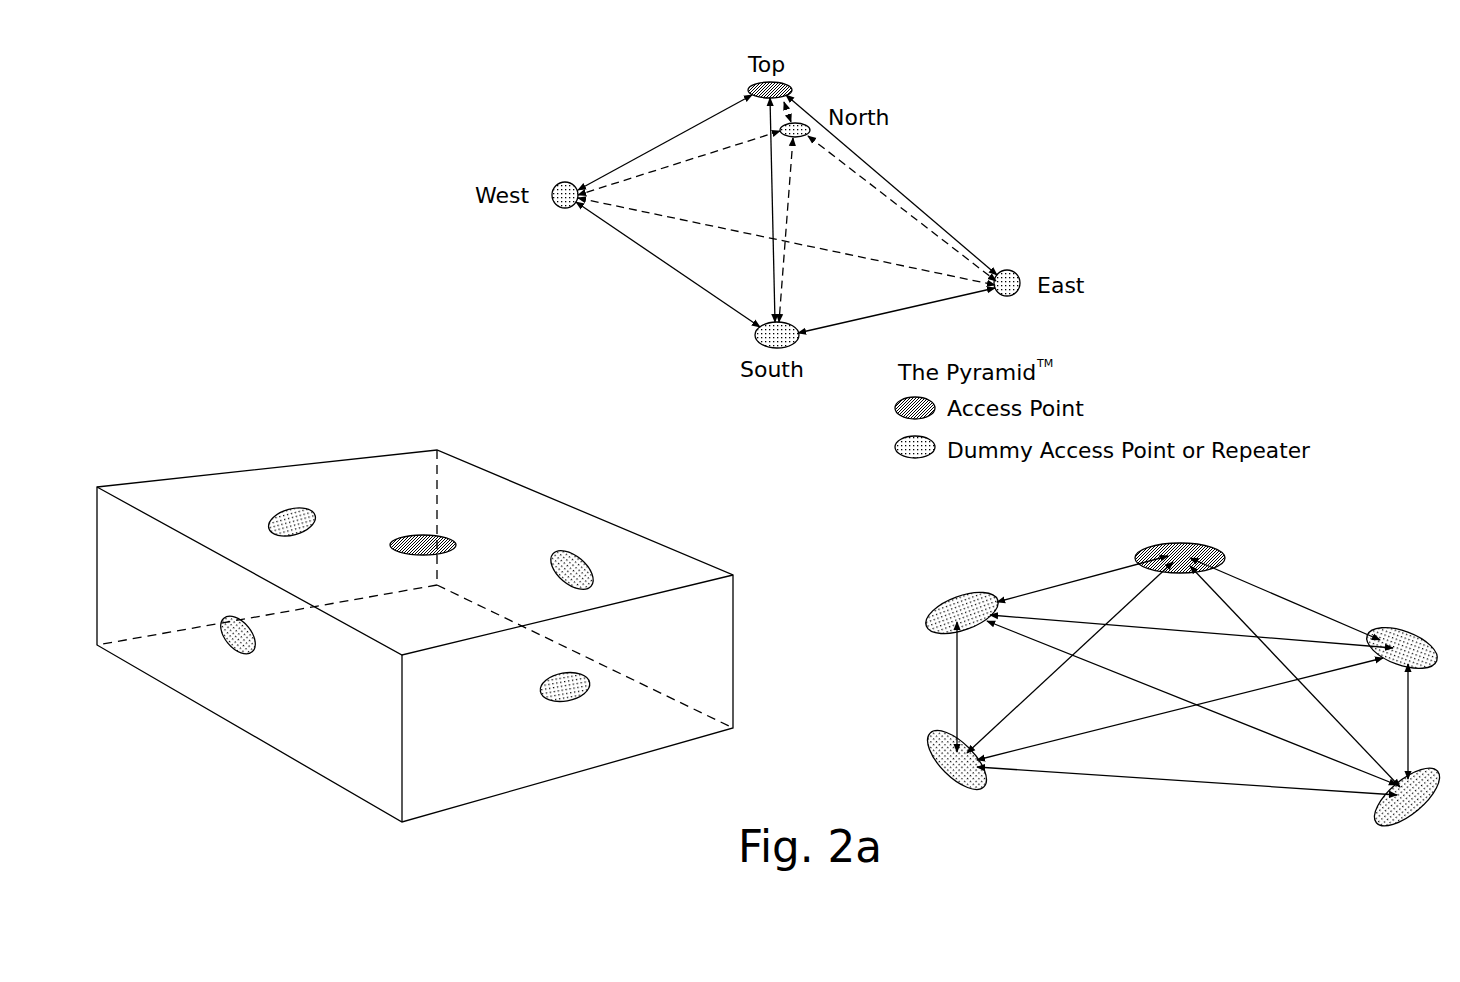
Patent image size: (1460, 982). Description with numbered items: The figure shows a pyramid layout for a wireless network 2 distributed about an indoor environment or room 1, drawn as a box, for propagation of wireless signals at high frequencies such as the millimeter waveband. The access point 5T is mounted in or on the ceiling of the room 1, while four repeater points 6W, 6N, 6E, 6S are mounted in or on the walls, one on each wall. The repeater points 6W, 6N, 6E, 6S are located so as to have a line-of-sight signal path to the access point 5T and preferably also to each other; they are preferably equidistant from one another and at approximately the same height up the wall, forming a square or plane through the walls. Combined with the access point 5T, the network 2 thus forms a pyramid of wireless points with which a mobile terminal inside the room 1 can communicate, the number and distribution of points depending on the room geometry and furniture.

The room 1 is at (503, 475).
The network 2 is at (248, 447).
The access point 5T is at (413, 535).
The repeater point 6N is at (267, 530).
The repeater point 6E is at (582, 555).
The repeater point 6W is at (223, 650).
The repeater point 6S is at (567, 700).